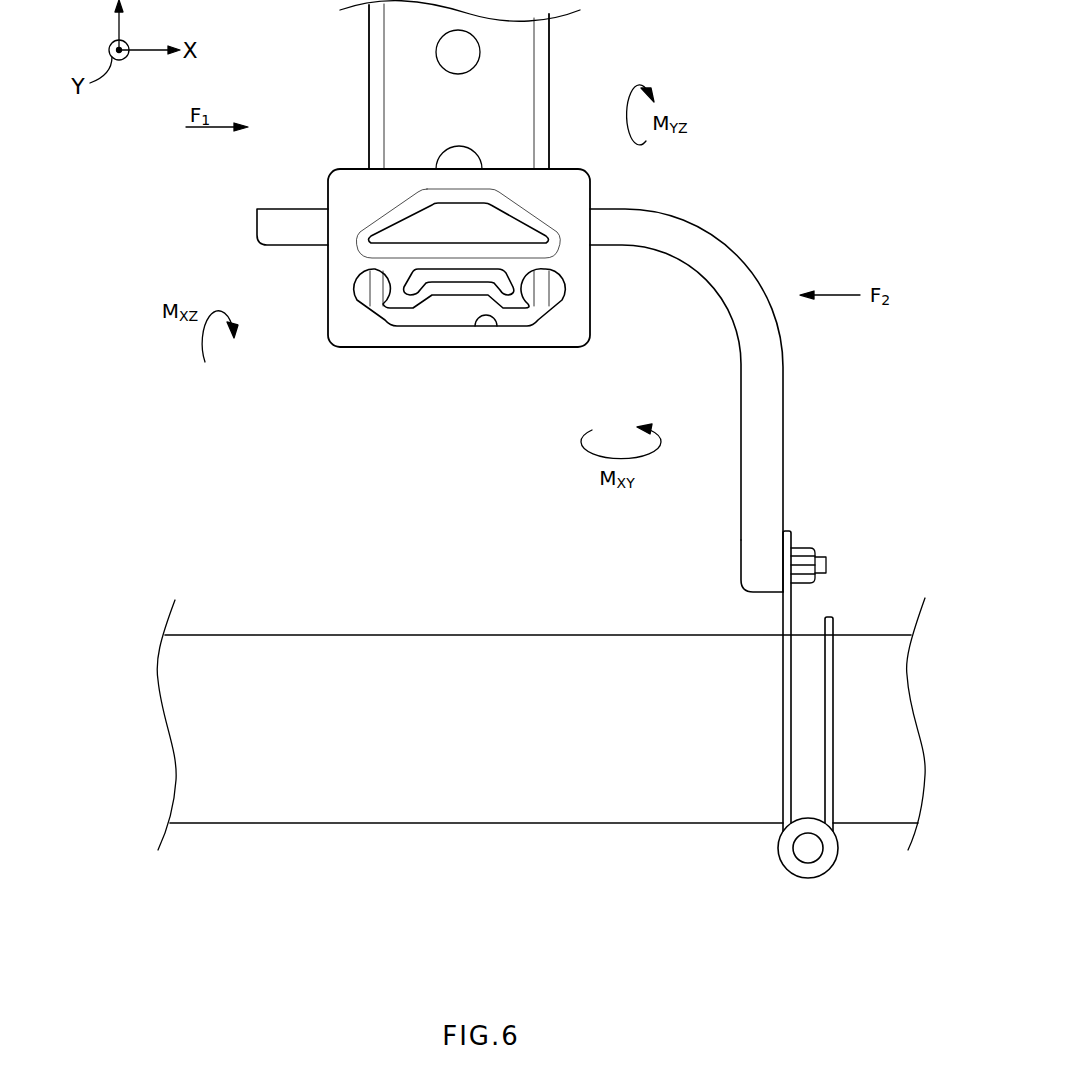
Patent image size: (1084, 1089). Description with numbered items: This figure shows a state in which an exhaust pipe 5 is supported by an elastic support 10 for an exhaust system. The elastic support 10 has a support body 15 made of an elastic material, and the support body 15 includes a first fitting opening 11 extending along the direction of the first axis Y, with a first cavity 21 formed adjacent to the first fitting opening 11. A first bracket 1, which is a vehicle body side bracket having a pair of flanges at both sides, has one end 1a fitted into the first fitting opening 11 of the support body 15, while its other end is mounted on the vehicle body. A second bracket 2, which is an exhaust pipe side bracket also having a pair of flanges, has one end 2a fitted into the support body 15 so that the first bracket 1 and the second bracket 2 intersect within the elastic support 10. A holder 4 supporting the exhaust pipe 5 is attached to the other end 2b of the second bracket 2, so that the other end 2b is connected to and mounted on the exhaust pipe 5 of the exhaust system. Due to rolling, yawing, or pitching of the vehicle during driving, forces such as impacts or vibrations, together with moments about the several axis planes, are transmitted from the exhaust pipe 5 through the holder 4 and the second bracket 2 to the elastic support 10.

The first bracket 1 is at (545, 66).
The one end of the first bracket 1a is at (437, 322).
The second bracket 2 is at (772, 405).
The one end of the second bracket 2a is at (287, 237).
The other end of the second bracket 2b is at (748, 557).
The holder 4 is at (787, 795).
The exhaust pipe 5 is at (505, 818).
The elastic support 10 is at (343, 158).
The first fitting opening 11 is at (480, 322).
The support body 15 is at (578, 317).
The first cavity 21 is at (468, 276).